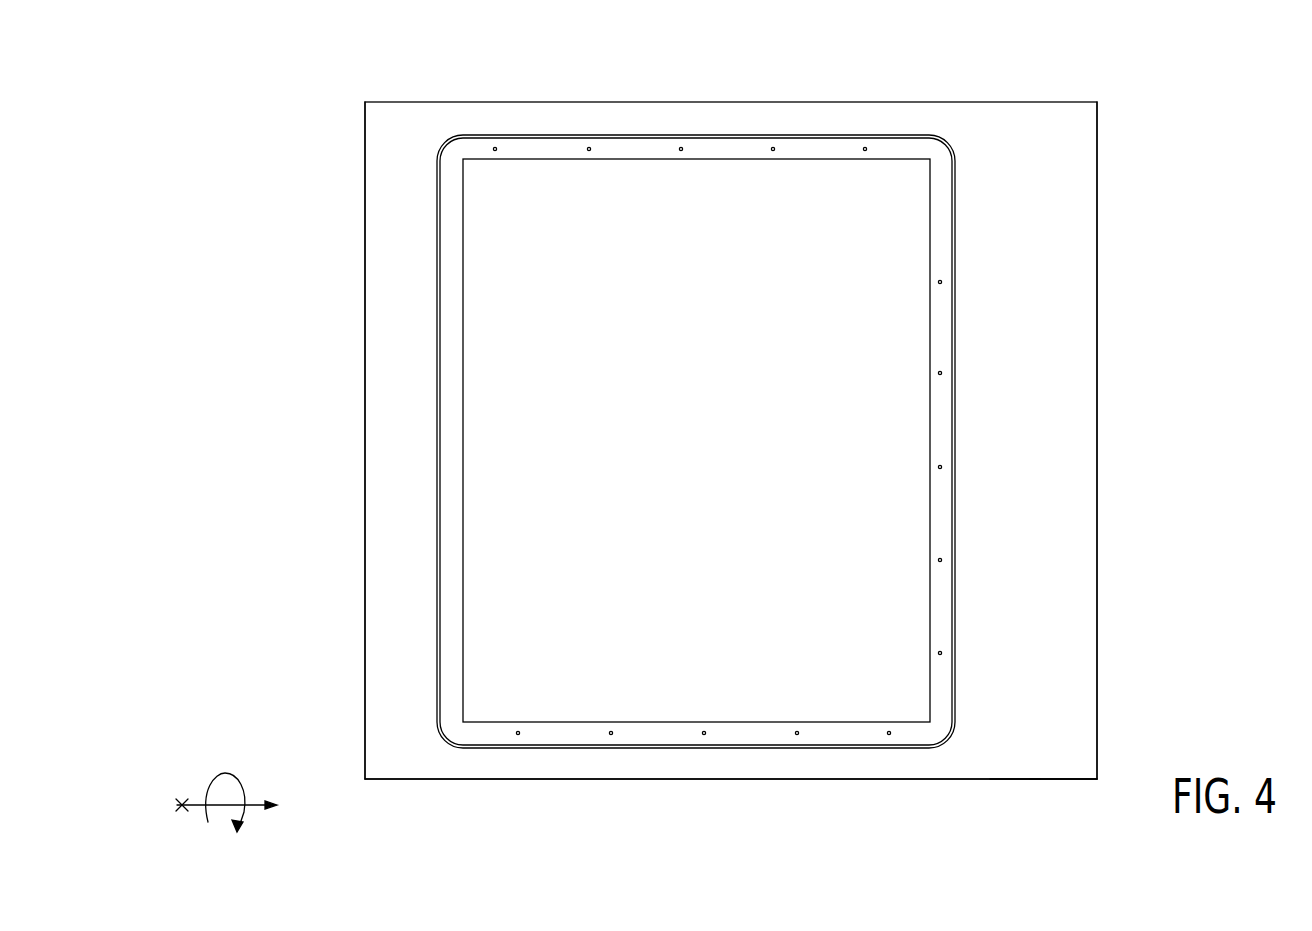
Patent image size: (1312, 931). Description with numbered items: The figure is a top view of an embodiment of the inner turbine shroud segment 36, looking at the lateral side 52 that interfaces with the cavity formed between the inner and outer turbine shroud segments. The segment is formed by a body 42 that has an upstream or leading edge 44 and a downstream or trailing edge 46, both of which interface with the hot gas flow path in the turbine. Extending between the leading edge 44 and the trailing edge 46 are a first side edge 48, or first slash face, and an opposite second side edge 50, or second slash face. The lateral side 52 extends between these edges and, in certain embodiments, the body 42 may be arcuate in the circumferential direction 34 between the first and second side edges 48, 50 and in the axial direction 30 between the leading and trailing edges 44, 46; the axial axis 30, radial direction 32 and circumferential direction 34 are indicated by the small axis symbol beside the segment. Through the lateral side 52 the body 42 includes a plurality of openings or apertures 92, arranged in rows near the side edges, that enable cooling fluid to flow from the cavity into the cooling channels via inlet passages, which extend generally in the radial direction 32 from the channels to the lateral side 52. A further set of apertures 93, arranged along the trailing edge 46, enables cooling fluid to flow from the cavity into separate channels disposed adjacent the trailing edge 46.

The axial axis 30 is at (253, 808).
The radial direction 32 is at (182, 800).
The circumferential direction 34 is at (213, 778).
The inner turbine shroud segment 36 is at (1017, 780).
The body 42 is at (1040, 780).
The leading edge 44 is at (365, 392).
The trailing edge 46 is at (1097, 418).
The first side edge 48 is at (580, 780).
The second side edge 50 is at (697, 101).
The lateral side 52 is at (835, 198).
The apertures 92 is at (681, 151).
The apertures 93 is at (940, 283).